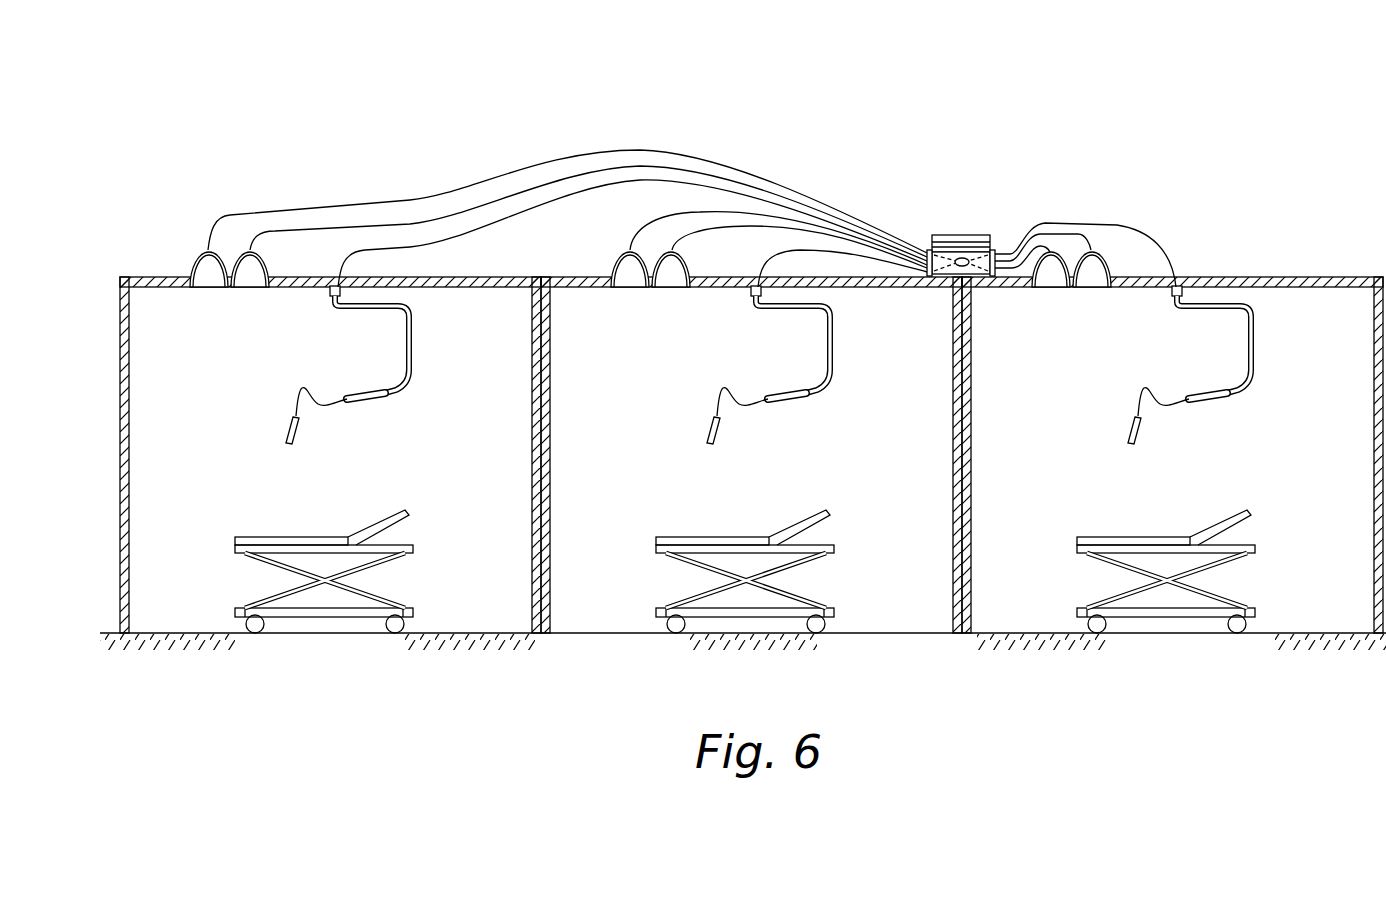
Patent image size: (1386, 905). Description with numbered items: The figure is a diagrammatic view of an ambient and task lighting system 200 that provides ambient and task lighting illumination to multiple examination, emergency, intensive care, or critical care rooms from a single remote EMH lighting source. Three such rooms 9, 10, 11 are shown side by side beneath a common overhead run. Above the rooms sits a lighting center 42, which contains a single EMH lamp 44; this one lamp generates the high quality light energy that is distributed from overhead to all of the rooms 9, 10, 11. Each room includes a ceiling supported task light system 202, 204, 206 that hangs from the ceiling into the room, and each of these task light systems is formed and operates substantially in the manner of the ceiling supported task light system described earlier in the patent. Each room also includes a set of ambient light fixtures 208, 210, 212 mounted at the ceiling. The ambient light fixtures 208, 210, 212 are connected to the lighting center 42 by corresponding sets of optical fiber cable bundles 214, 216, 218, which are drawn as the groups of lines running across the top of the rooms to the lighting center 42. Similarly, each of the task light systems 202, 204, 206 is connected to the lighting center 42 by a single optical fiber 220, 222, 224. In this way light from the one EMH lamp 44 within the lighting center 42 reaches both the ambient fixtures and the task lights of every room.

The ambient and task lighting system 200 is at (743, 354).
The room 9 is at (473, 507).
The room 10 is at (751, 455).
The room 11 is at (1172, 455).
The ceiling supported task light system 202 is at (383, 414).
The ceiling supported task light system 204 is at (816, 365).
The ceiling supported task light system 206 is at (1237, 365).
The ambient light fixtures 208 is at (226, 300).
The ambient light fixtures 210 is at (650, 322).
The ambient light fixtures 212 is at (1071, 322).
The optical fiber cable bundle 214 is at (262, 200).
The optical fiber cable bundle 216 is at (645, 212).
The optical fiber cable bundle 218 is at (1066, 213).
The single optical fiber 220 is at (453, 218).
The single optical fiber 222 is at (793, 250).
The single optical fiber 224 is at (1168, 252).
The lighting center 42 is at (930, 230).
The EMH lamp 44 is at (963, 259).